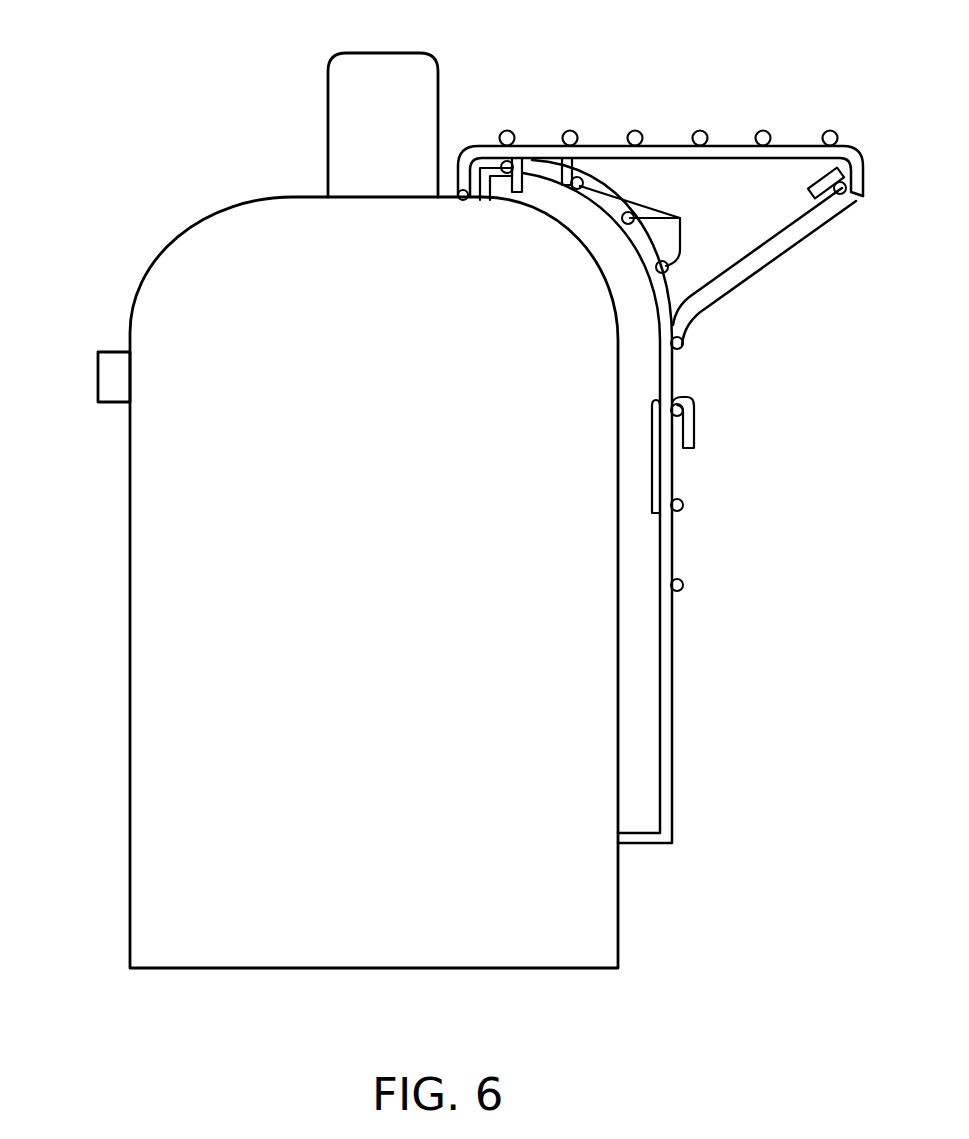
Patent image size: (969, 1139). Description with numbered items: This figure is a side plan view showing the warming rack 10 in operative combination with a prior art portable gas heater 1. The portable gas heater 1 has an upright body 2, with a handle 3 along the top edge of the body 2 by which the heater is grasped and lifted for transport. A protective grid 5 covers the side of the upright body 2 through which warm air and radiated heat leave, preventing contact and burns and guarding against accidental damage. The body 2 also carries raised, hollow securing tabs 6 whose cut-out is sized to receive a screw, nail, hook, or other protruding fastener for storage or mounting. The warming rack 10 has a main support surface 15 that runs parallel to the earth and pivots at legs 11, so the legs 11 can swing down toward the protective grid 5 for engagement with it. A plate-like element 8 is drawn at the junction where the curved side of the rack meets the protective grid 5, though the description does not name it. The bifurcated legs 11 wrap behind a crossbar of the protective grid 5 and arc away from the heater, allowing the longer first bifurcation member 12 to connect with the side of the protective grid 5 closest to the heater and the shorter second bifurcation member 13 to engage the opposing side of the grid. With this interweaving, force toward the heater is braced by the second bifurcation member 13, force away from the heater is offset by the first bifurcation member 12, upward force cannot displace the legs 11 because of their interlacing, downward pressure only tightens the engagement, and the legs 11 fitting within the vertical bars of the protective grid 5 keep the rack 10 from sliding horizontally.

The portable gas heater 1 is at (147, 126).
The upright body 2 is at (364, 589).
The handle 3 is at (380, 72).
The protective grid 5 is at (668, 653).
The securing tabs 6 is at (95, 367).
The reinforcing plate 8 is at (645, 226).
The warming rack 10 is at (790, 106).
The legs 11 is at (753, 257).
The first bifurcation member 12 is at (658, 490).
The second bifurcation member 13 is at (697, 432).
The main support surface 15 is at (658, 148).